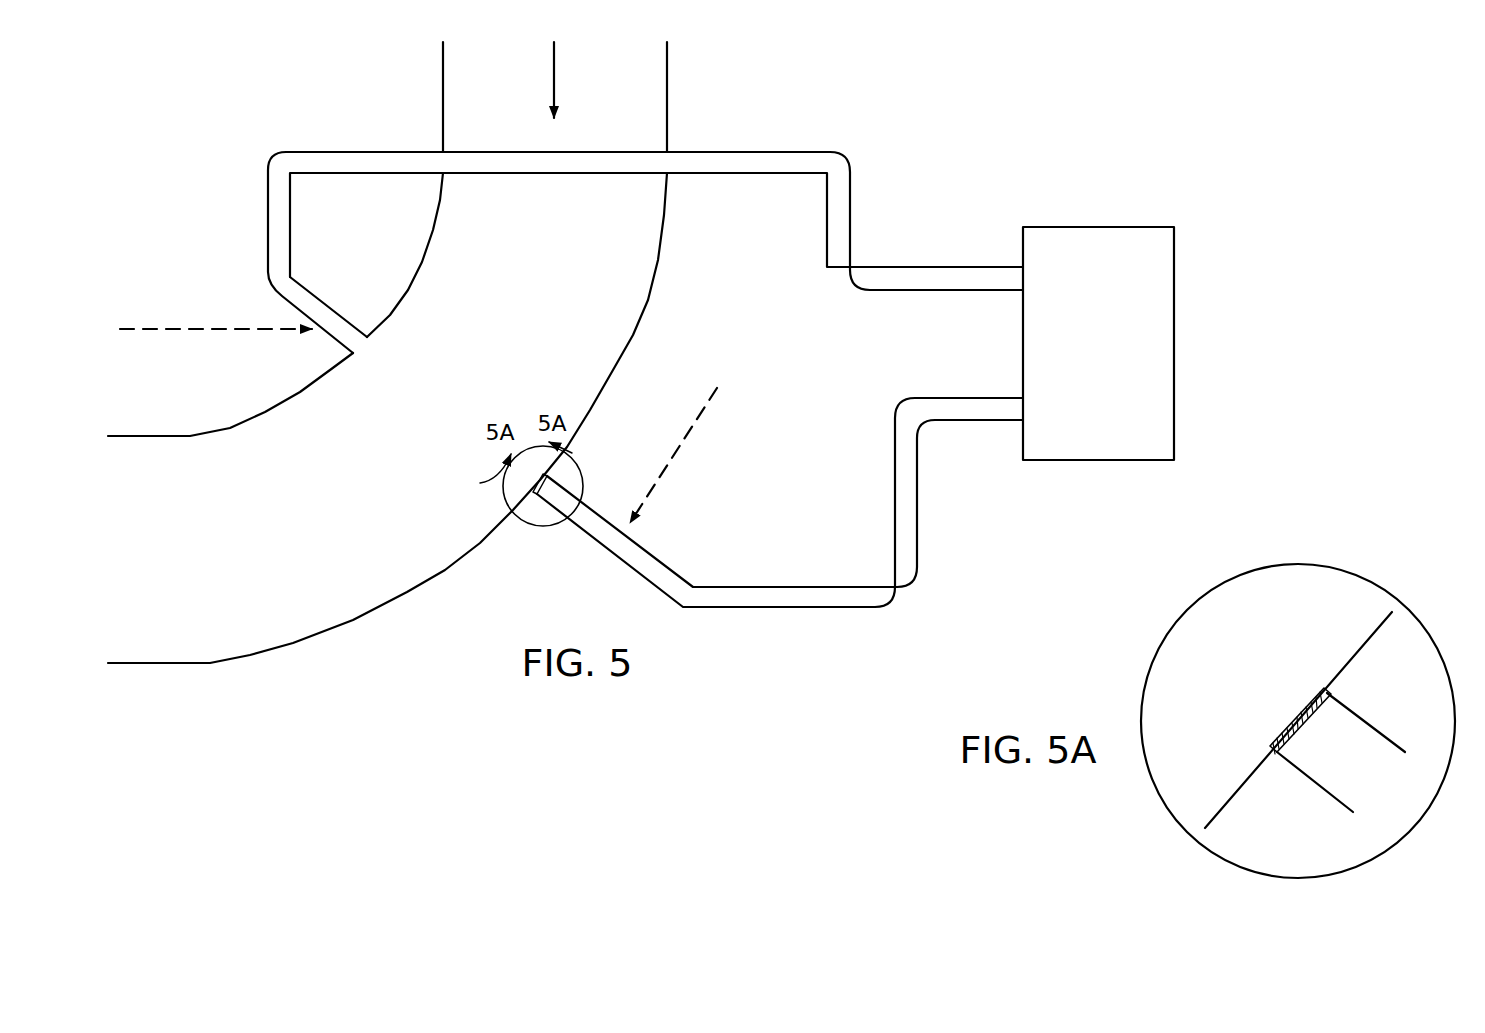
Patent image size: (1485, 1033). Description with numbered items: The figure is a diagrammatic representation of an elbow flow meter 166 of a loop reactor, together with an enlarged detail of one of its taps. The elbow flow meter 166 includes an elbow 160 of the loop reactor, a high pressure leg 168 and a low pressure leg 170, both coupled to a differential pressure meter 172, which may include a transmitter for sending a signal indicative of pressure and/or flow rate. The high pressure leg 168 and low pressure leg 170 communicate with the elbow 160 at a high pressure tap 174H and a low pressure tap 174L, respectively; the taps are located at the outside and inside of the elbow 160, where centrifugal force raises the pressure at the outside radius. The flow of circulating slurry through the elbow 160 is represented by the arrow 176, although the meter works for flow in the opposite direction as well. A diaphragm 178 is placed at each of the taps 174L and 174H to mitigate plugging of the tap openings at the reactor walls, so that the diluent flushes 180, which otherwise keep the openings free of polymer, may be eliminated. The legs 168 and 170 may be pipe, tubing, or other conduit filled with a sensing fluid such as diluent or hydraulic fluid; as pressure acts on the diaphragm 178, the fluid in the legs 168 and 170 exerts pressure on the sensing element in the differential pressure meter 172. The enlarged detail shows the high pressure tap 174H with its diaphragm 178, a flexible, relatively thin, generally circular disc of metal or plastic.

In FIG. 5, the elbow 160 is at (668, 120).
In FIG. 5, the elbow flow meter 166 is at (193, 208).
In FIG. 5A, the high pressure leg 168 is at (1368, 722).
In FIG. 5, the low pressure leg 170 is at (278, 157).
In FIG. 5, the differential pressure meter 172 is at (1082, 423).
In FIG. 5, the high pressure tap 174H is at (520, 485).
In FIG. 5A, the high pressure tap 174H is at (1256, 724).
In FIG. 5, the low pressure tap 174L is at (366, 374).
In FIG. 5, the arrow 176 is at (554, 68).
In FIG. 5, the diaphragm 178 is at (362, 349).
In FIG. 5A, the diaphragm 178 is at (1290, 715).
In FIG. 5, the diluent flush 180 is at (226, 330).